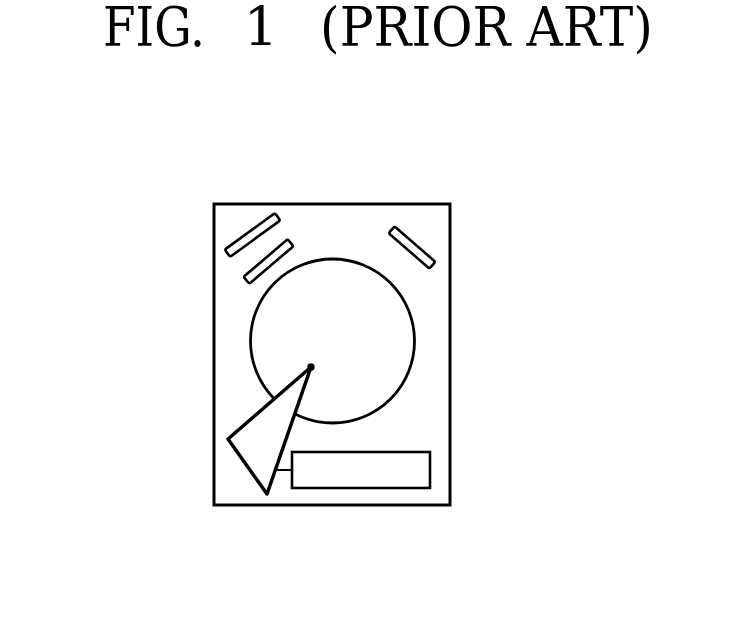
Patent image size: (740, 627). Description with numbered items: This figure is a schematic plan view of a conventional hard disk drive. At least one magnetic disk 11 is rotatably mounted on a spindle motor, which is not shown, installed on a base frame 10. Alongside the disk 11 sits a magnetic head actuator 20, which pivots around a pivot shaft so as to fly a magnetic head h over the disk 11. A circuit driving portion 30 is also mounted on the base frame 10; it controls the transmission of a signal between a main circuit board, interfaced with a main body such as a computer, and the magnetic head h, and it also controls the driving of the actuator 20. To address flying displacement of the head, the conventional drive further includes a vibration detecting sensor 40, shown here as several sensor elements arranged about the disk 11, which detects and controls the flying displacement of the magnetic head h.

The base frame 10 is at (445, 393).
The magnetic disk 11 is at (397, 332).
The magnetic head actuator 20 is at (245, 408).
The circuit driving portion 30 is at (428, 470).
The vibration detecting sensor 40 is at (392, 231).
The magnetic head h is at (310, 366).